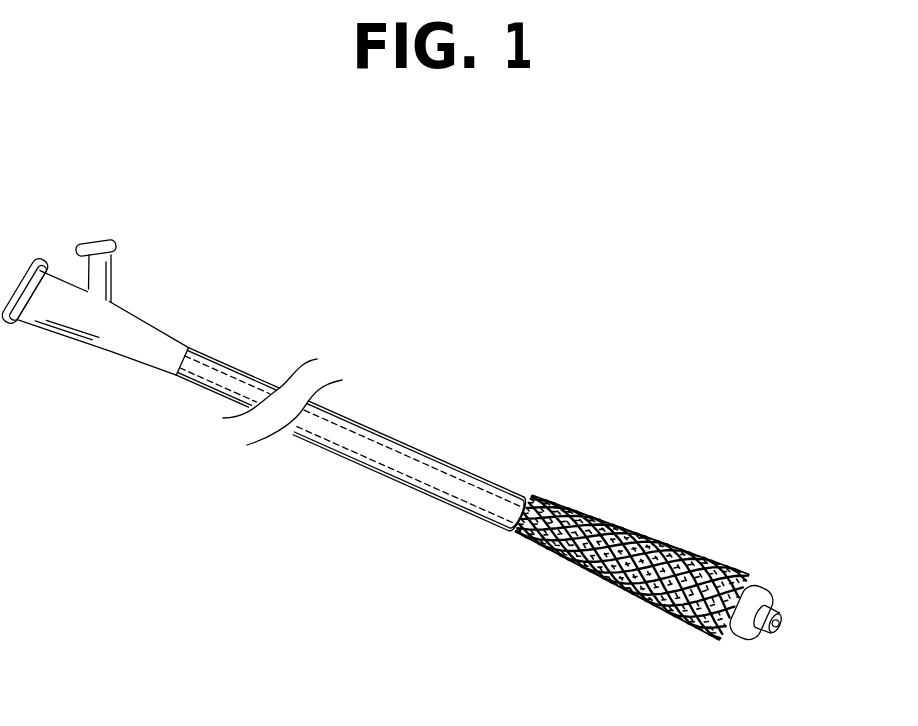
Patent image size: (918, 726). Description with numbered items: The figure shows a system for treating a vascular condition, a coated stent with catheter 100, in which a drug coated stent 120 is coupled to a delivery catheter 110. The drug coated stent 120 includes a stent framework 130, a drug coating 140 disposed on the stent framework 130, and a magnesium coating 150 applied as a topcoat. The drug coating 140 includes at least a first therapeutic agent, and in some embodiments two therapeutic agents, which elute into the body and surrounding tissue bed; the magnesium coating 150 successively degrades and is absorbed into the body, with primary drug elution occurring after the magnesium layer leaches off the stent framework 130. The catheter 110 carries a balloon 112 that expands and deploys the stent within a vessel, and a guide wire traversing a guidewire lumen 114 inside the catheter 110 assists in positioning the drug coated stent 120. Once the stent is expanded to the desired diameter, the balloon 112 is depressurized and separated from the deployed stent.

The coated stent with catheter 100 is at (76, 170).
The delivery catheter 110 is at (229, 365).
The drug coated stent 120 is at (588, 502).
The stent framework 130 is at (652, 530).
The drug coating 140 is at (723, 577).
The balloon 112 is at (753, 583).
The guidewire lumen 114 is at (780, 627).
The magnesium coating 150 is at (575, 583).